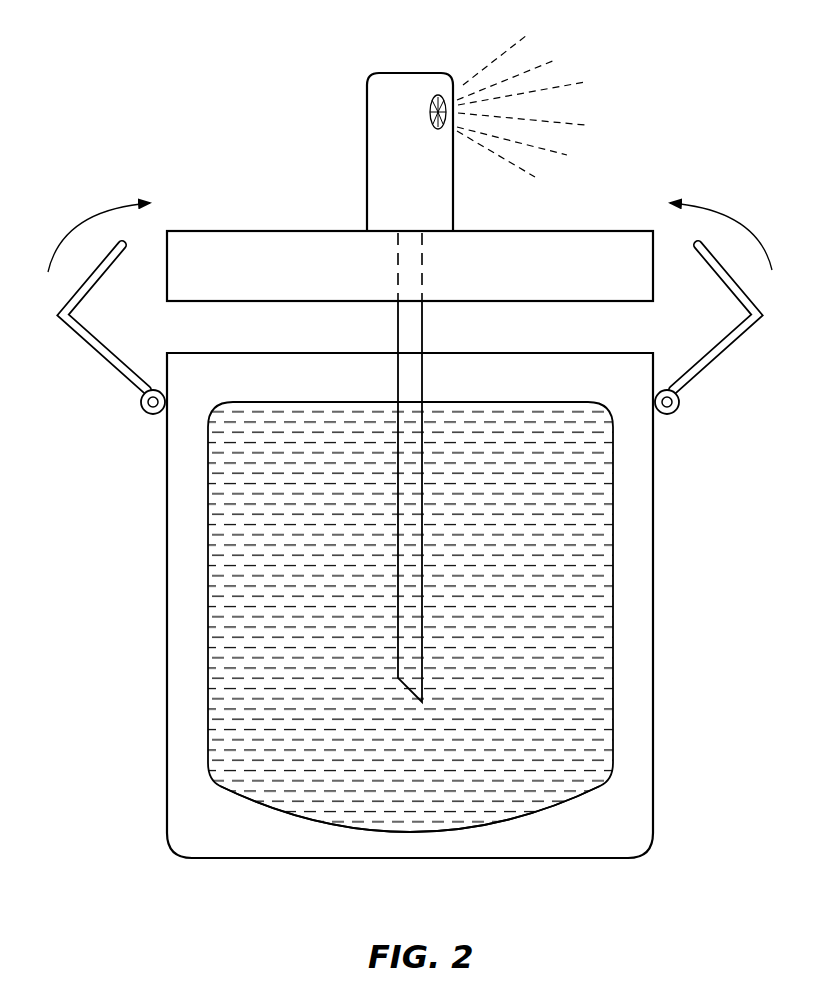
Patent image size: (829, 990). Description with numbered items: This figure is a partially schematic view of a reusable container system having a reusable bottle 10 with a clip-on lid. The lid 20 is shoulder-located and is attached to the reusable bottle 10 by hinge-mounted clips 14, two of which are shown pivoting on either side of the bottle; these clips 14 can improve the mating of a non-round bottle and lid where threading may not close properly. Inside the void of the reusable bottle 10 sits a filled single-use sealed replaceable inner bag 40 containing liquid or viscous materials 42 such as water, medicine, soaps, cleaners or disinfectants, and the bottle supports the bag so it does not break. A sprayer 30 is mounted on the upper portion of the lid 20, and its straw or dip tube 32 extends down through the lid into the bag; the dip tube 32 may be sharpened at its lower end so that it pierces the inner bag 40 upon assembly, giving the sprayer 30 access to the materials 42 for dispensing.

The reusable bottle 10 is at (167, 589).
The hinge-mounted clip 14 is at (103, 353).
The lid 20 is at (258, 231).
The sprayer 30 is at (367, 131).
The dip tube 32 is at (427, 633).
The inner bag 40 is at (207, 768).
The liquid or viscous materials 42 is at (327, 803).